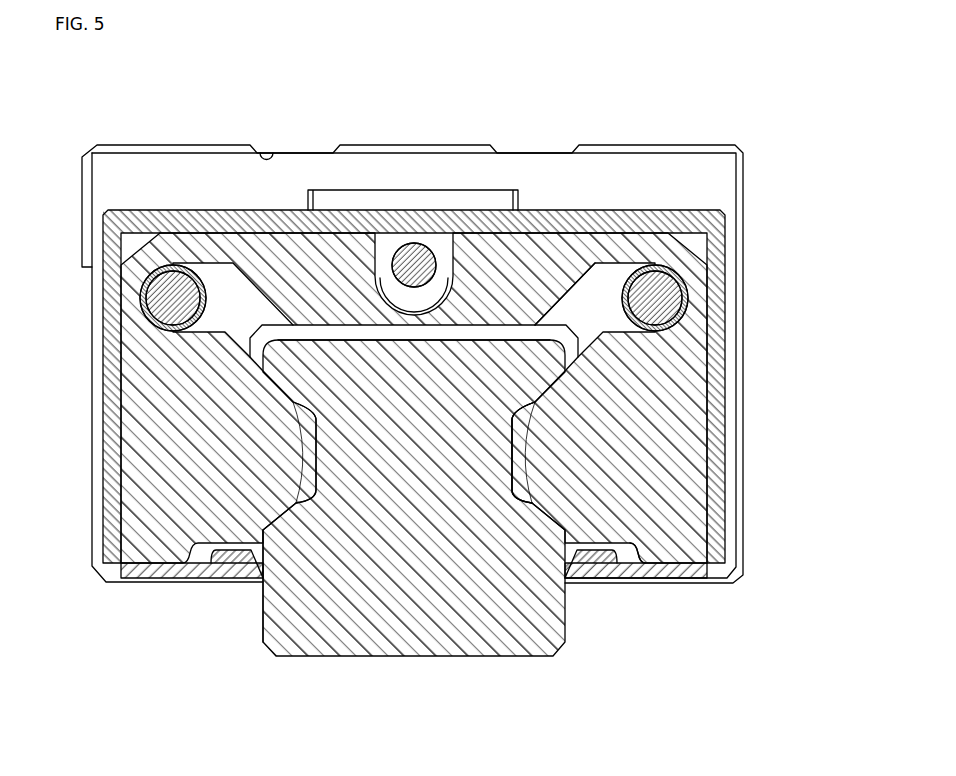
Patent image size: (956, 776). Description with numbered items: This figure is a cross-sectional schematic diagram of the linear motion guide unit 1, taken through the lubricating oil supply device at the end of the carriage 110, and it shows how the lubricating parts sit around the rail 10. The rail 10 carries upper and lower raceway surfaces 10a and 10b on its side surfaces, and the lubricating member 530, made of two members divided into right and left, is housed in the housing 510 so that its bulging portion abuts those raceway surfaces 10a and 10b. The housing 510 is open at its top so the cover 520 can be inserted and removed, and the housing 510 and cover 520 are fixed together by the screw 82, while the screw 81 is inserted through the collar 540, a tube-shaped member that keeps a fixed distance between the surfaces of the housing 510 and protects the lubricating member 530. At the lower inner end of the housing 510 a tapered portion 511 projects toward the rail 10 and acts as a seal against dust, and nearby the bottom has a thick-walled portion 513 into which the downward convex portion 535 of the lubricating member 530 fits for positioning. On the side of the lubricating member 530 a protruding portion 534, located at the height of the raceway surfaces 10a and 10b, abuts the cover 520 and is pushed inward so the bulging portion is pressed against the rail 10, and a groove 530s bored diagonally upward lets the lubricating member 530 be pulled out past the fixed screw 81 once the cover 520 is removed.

The linear motion guide unit 1 is at (463, 112).
The rail 10 is at (423, 634).
The raceway surface 10a is at (293, 512).
The raceway surface 10b is at (300, 338).
The screw 81 is at (668, 302).
The screw 82 is at (413, 257).
The carriage 110 is at (650, 172).
The housing 510 is at (662, 575).
The tapered portion 511 is at (578, 582).
The thick-walled portion 513 is at (607, 565).
The cover 520 is at (717, 388).
The lubricating member 530 is at (680, 368).
The groove 530s is at (586, 312).
The protruding portion 534 is at (703, 466).
The convex portion 535 is at (677, 553).
The collar 540 is at (686, 282).